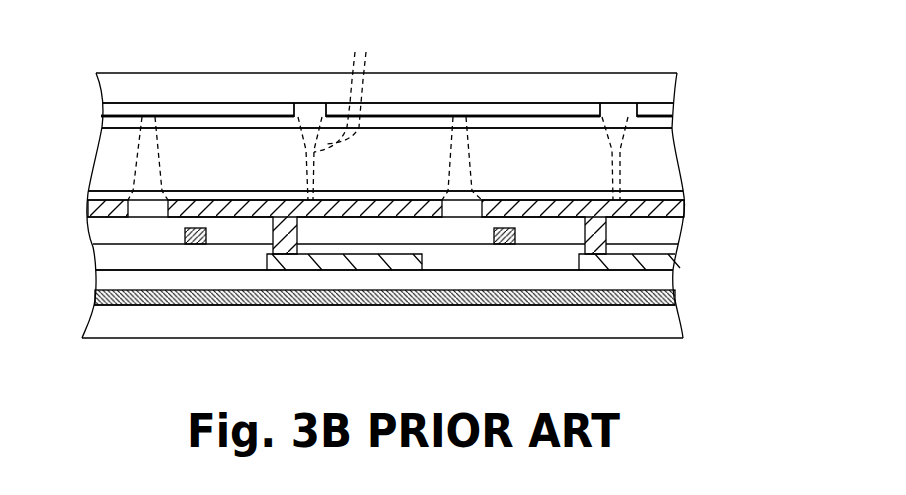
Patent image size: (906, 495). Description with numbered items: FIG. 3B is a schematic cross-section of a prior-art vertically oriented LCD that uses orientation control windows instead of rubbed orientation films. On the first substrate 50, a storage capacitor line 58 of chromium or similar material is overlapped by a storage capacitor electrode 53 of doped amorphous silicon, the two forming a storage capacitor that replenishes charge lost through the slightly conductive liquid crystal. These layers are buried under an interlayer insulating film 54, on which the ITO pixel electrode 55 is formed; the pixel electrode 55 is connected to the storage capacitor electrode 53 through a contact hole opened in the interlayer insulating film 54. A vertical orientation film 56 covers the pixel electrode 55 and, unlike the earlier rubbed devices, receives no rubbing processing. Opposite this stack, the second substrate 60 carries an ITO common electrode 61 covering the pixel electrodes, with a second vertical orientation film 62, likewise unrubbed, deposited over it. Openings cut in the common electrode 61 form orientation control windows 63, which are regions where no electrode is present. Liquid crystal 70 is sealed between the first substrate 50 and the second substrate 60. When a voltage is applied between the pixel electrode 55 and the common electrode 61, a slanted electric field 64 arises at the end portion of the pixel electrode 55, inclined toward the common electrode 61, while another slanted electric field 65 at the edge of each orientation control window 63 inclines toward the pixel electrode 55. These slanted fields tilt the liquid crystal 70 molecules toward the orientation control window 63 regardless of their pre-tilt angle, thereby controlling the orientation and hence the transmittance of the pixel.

The first substrate 50 is at (672, 328).
The storage capacitor electrode 53 is at (672, 262).
The interlayer insulating film 54 is at (672, 250).
The pixel electrode 55 is at (678, 212).
The vertical orientation film 56 is at (683, 195).
The storage capacitor line 58 is at (668, 282).
The second substrate 60 is at (658, 92).
The common electrode 61 is at (663, 110).
The vertical orientation film 62 is at (665, 123).
The orientation control window 63 is at (307, 108).
The electric field 64 is at (156, 152).
The electric field 65 is at (346, 92).
The liquid crystal 70 is at (663, 165).